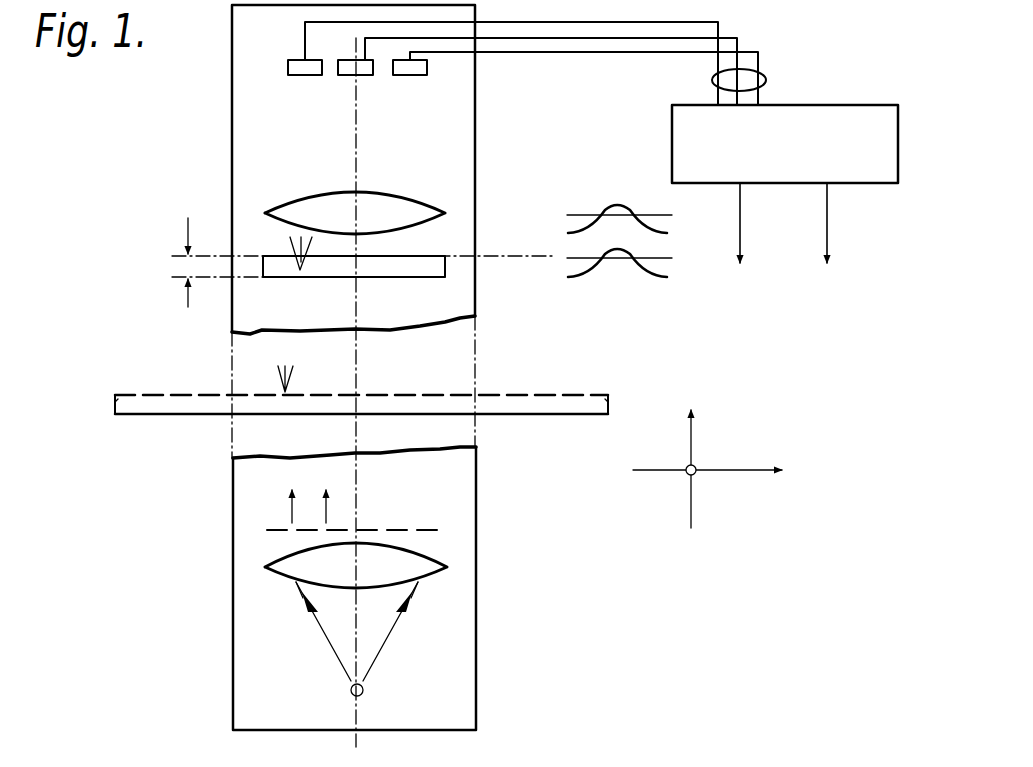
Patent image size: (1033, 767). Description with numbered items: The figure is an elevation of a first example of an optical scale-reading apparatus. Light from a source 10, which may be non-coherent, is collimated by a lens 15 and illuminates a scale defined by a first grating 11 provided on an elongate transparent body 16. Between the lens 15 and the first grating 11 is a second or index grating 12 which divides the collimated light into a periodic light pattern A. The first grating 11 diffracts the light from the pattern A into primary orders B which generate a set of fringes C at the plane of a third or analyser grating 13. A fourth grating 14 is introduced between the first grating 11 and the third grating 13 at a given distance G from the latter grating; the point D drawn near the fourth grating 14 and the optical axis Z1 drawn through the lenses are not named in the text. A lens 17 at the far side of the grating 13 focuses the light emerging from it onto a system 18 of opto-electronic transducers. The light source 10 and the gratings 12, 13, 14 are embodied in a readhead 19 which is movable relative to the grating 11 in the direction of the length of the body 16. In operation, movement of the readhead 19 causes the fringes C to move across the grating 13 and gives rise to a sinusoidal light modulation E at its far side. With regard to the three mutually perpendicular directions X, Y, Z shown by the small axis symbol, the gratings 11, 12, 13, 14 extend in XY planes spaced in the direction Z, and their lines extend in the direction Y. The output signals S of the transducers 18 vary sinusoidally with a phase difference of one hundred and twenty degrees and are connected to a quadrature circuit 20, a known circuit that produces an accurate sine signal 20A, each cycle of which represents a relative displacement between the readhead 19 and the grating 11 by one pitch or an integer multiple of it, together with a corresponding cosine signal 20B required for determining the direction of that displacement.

The source 10 is at (364, 690).
The first grating 11 is at (580, 397).
The second (or index) grating 12 is at (295, 533).
The third or analyser grating 13 is at (440, 256).
The fourth grating 14 is at (440, 277).
The lens 15 is at (447, 567).
The elongate transparent body 16 is at (577, 416).
The lens 17 is at (420, 206).
The system of opto-electronic transducers 18 is at (268, 66).
The readhead 19 is at (480, 112).
The quadrature circuit 20 is at (672, 146).
The sine signal 20A is at (742, 221).
The cosine signal 20B is at (829, 225).
The output signals S is at (767, 80).
The optical axis Z1 is at (355, 152).
The given distance G is at (186, 265).
The focus point D is at (290, 250).
The primary orders B is at (276, 372).
The periodic light pattern A is at (290, 512).
The sinusoidal light modulation E is at (620, 203).
The fringes C is at (652, 278).
The direction X is at (719, 472).
The direction Y is at (696, 475).
The direction Z is at (693, 445).